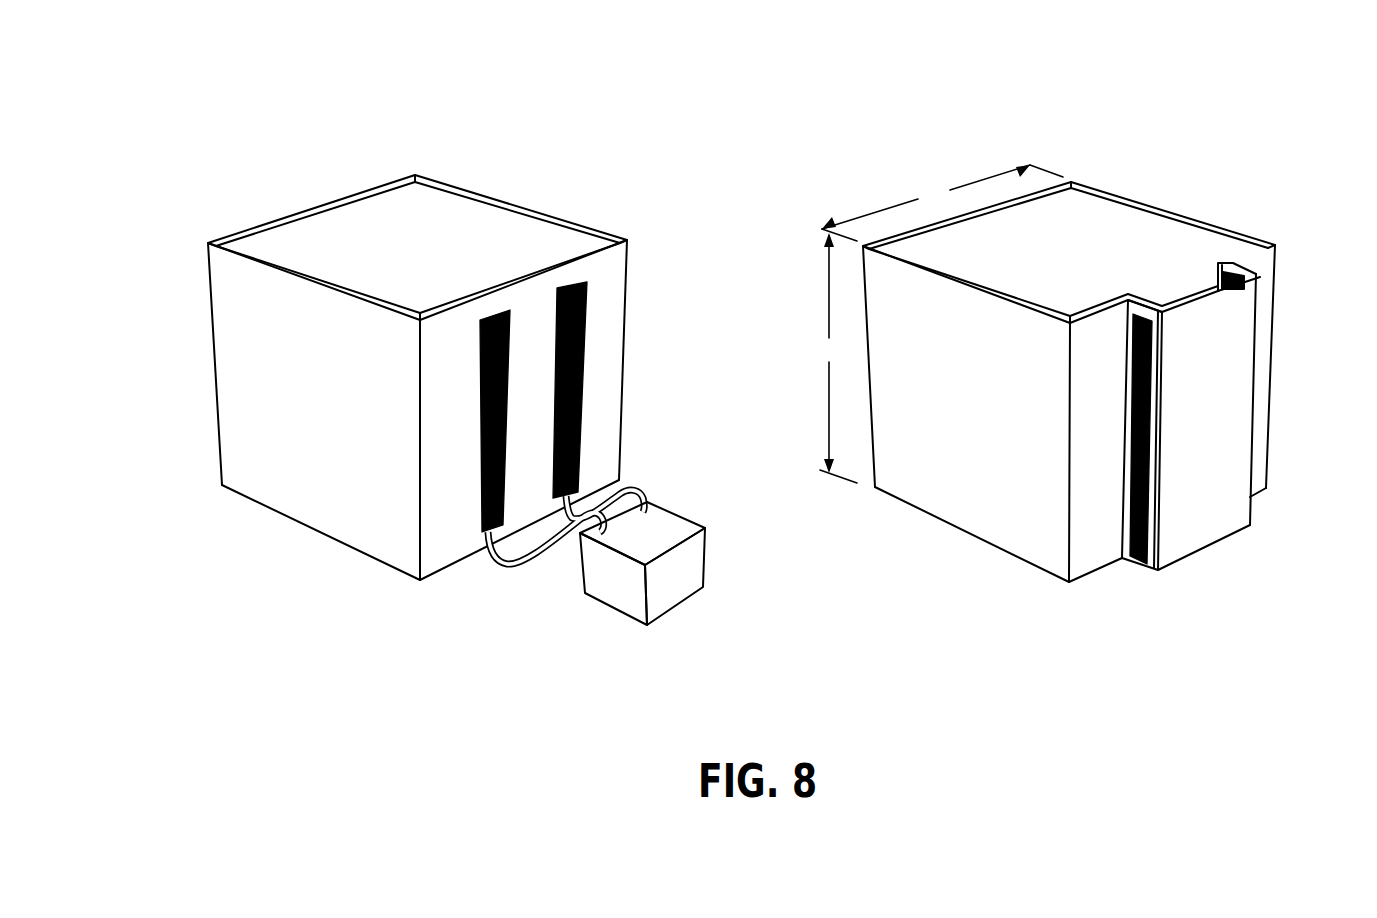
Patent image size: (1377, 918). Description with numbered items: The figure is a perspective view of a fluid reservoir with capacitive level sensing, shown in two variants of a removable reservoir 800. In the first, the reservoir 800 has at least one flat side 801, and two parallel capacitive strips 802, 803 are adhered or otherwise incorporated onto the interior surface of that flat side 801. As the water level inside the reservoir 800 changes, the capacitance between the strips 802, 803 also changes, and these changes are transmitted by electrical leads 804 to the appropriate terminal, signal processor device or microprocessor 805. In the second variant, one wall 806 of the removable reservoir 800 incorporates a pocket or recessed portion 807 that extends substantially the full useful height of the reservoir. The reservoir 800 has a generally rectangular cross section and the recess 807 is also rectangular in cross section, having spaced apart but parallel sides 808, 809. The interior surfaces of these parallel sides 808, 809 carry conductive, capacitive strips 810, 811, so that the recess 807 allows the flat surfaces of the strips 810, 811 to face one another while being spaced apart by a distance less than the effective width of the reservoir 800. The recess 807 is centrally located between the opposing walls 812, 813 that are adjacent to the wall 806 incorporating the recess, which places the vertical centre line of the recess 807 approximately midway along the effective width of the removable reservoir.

The removable reservoir 800 is at (360, 96).
The flat side 801 is at (610, 275).
The capacitive strip 802 is at (478, 482).
The capacitive strip 803 is at (585, 377).
The electrical leads 804 is at (497, 558).
The microprocessor 805 is at (652, 528).
The wall 806 is at (1262, 325).
The recessed portion 807 is at (1205, 423).
The side of recess 808 is at (1147, 565).
The side of recess 809 is at (1247, 268).
The conductive capacitive strip 810 is at (1133, 563).
The conductive capacitive strip 811 is at (1228, 267).
The opposing wall 812 is at (968, 487).
The opposing wall 813 is at (1100, 212).